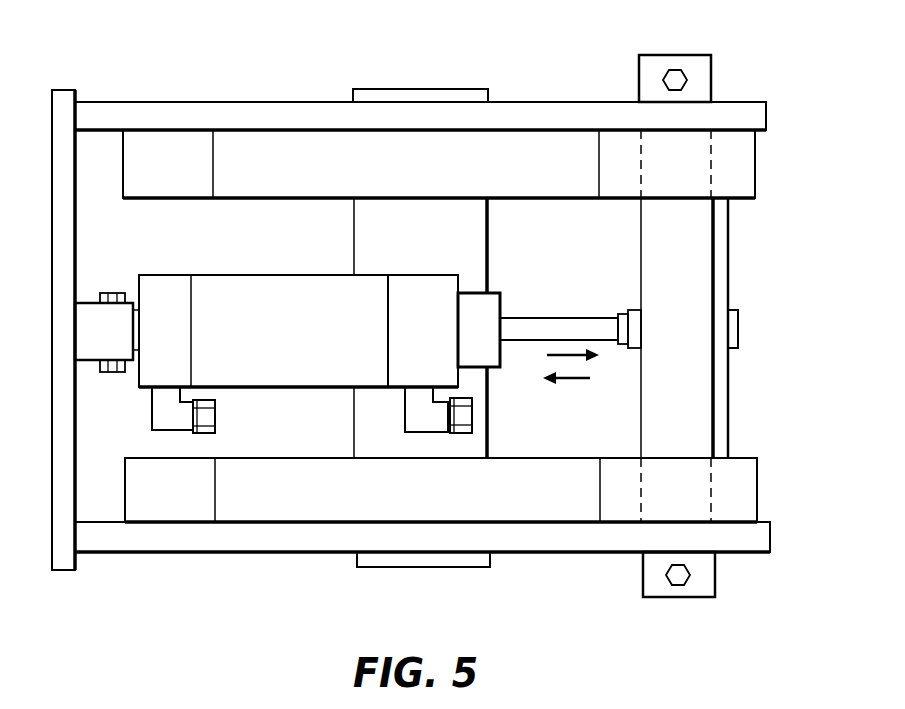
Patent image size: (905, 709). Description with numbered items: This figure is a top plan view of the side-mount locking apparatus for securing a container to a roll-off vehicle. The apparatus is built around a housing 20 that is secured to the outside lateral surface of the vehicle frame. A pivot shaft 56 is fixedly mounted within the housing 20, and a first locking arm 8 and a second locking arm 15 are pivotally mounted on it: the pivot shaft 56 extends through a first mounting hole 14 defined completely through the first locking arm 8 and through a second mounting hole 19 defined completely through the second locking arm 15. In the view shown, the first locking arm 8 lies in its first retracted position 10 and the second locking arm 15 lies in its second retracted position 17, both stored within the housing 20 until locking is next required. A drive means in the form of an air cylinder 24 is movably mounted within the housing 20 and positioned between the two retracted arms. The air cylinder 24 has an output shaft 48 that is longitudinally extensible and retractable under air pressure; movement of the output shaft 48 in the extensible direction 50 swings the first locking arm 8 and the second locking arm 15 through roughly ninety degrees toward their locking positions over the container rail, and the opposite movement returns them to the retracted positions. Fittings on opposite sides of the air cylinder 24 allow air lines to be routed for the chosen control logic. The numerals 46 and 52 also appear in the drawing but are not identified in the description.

The first locking arm 8 is at (439, 164).
The first retracted position 10 is at (320, 138).
The first mounting hole 14 is at (638, 145).
The second locking arm 15 is at (441, 490).
The second retracted position 17 is at (233, 517).
The second mounting hole 19 is at (641, 505).
The housing 20 is at (732, 102).
The air cylinder 24 is at (248, 288).
The cylinder body 46 is at (319, 331).
The output shaft 48 is at (546, 328).
The extensible direction 50 is at (545, 350).
The retraction direction arrow 52 is at (575, 378).
The pivot shaft 56 is at (677, 328).